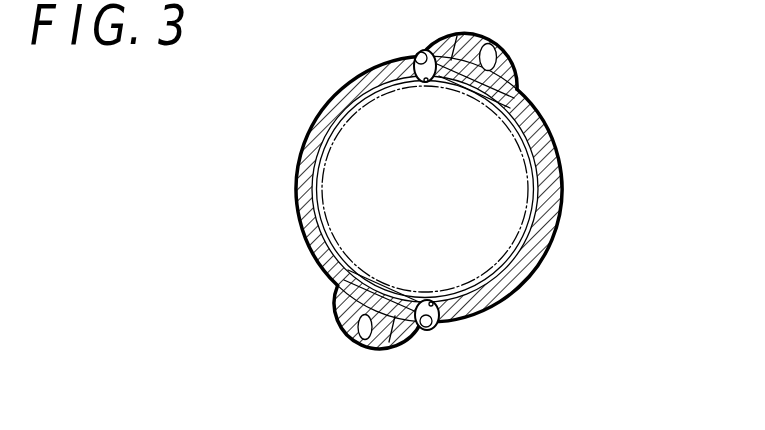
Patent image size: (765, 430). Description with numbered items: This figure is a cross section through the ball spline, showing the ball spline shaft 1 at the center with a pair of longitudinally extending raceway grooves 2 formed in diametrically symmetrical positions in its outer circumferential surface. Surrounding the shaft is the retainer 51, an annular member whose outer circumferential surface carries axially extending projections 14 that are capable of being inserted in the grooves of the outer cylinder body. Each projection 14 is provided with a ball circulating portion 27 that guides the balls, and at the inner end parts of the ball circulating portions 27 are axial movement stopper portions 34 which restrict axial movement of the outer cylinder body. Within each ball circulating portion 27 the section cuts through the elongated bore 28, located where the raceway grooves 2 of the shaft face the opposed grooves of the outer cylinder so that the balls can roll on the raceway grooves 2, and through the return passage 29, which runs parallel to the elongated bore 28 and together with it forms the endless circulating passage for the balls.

The ball spline shaft 1 is at (490, 214).
The raceway grooves 2 is at (427, 84).
The projections 14 is at (497, 67).
The ball circulating portions 27 is at (497, 88).
The elongated bore 28 is at (413, 54).
The return passage 29 is at (490, 44).
The axial movement stopper portions 34 is at (447, 50).
The retainer 51 is at (300, 200).